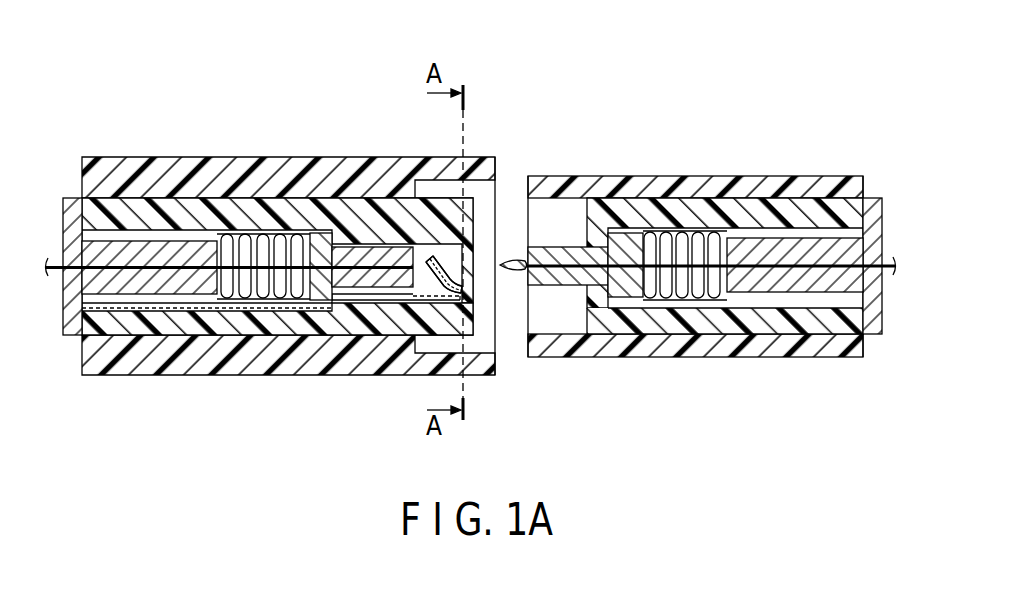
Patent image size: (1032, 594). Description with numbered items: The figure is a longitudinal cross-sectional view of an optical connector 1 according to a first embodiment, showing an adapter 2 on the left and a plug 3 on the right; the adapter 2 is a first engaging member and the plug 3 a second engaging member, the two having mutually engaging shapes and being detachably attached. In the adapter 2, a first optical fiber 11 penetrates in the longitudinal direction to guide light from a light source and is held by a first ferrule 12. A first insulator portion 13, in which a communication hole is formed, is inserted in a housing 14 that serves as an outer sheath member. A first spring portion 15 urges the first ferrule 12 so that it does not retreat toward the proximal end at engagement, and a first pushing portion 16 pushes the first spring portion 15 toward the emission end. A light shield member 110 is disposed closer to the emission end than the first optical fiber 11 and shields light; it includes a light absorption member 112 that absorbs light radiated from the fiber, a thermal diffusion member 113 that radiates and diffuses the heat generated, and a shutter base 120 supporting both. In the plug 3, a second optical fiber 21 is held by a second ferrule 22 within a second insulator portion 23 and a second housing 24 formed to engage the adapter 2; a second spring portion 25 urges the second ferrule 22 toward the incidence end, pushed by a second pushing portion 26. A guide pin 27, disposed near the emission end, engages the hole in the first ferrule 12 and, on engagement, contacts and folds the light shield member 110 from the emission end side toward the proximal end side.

The optical connector 1 is at (470, 221).
The adapter 2 is at (286, 230).
The plug 3 is at (698, 219).
The first optical fiber 11 is at (103, 270).
The first ferrule 12 is at (357, 248).
The first insulator portion 13 is at (312, 215).
The housing 14 is at (262, 185).
The first spring portion 15 is at (244, 247).
The first pushing portion 16 is at (147, 247).
The second optical fiber 21 is at (834, 268).
The second ferrule 22 is at (571, 250).
The second insulator portion 23 is at (633, 205).
The second housing 24 is at (674, 192).
The second spring portion 25 is at (683, 240).
The second pushing portion 26 is at (803, 247).
The guide pin 27 is at (515, 262).
The light shield member 110 is at (452, 270).
The light absorption member 112 is at (417, 298).
The thermal diffusion member 113 is at (445, 244).
The shutter base 120 is at (425, 256).